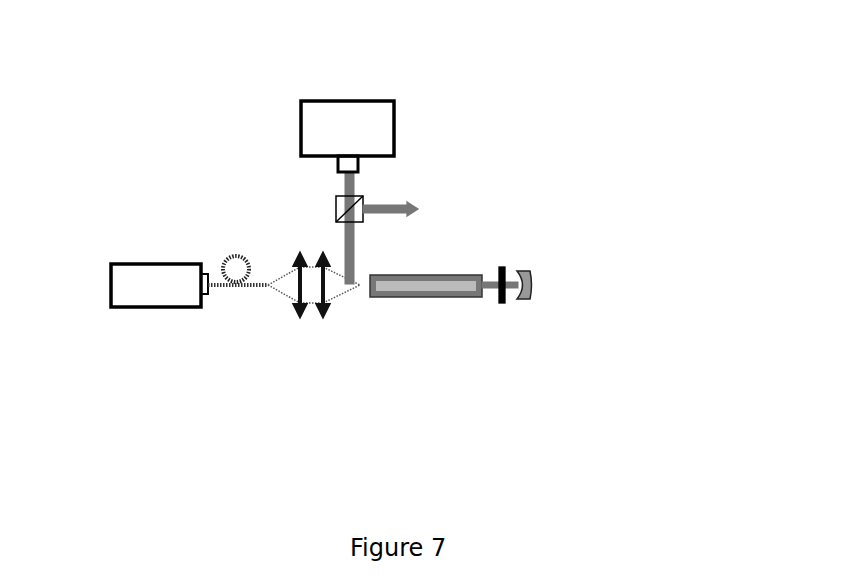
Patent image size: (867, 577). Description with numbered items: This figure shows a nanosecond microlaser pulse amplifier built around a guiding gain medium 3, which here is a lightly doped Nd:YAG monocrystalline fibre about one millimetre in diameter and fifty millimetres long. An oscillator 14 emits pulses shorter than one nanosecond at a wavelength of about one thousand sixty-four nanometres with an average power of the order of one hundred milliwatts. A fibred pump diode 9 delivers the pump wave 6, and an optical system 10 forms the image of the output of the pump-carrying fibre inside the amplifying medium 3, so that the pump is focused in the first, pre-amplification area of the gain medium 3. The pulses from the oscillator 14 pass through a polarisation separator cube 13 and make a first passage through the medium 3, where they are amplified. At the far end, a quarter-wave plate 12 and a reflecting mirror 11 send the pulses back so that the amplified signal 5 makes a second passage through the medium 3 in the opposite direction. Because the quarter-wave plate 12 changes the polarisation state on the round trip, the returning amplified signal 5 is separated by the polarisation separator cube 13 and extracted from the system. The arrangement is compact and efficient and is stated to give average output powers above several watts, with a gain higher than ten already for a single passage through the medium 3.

The gain medium 3 is at (420, 300).
The amplified signal 5 is at (423, 207).
The pump wave 6 is at (338, 305).
The fibred pump diode 9 is at (141, 262).
The optical system 10 is at (314, 313).
The reflecting mirror 11 is at (527, 300).
The quarter-wave plate 12 is at (505, 260).
The polarisation separator cube 13 is at (335, 218).
The oscillator 14 is at (348, 101).